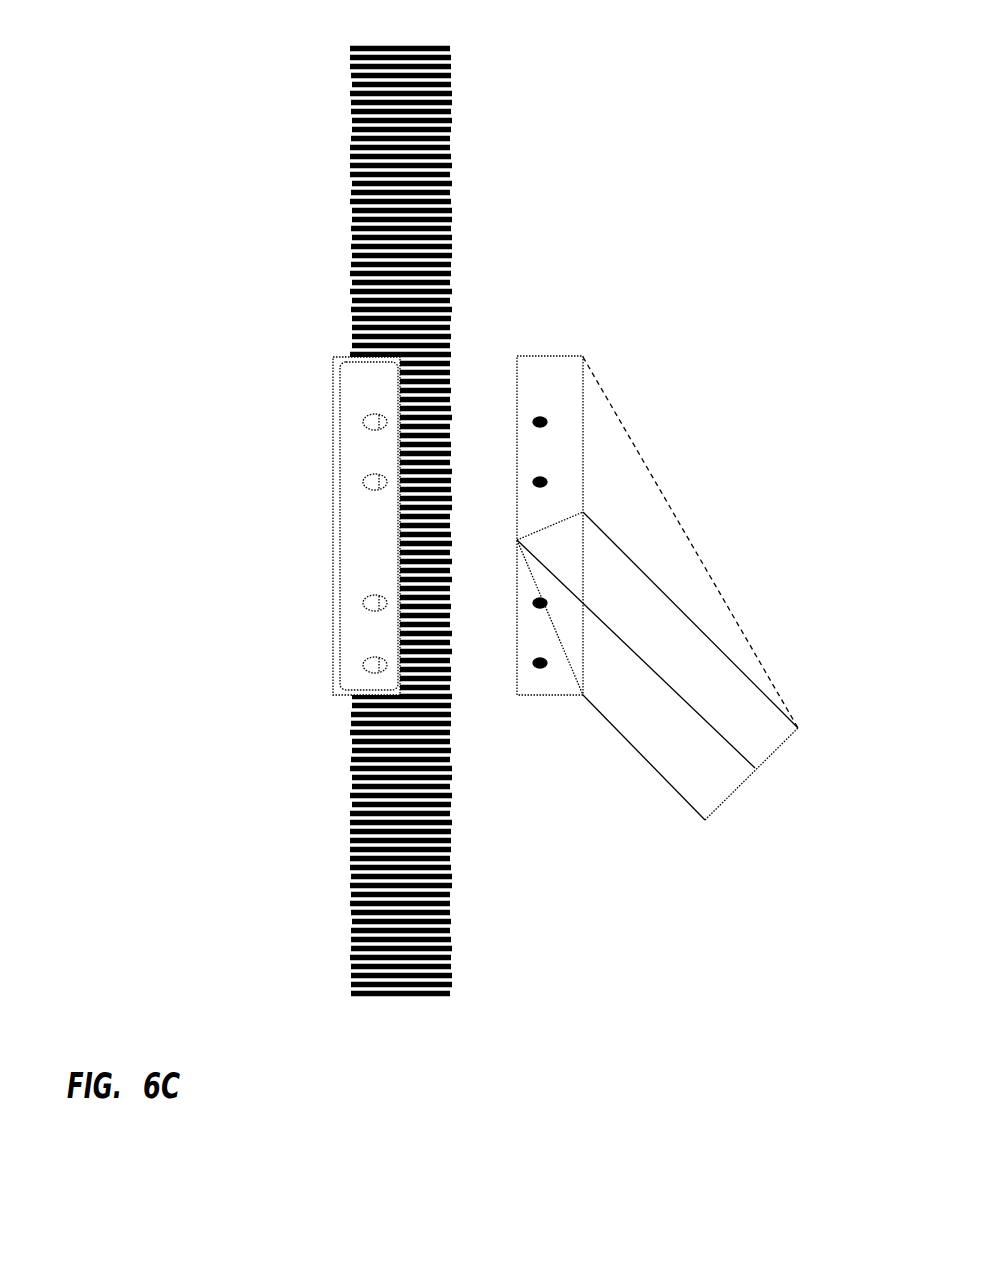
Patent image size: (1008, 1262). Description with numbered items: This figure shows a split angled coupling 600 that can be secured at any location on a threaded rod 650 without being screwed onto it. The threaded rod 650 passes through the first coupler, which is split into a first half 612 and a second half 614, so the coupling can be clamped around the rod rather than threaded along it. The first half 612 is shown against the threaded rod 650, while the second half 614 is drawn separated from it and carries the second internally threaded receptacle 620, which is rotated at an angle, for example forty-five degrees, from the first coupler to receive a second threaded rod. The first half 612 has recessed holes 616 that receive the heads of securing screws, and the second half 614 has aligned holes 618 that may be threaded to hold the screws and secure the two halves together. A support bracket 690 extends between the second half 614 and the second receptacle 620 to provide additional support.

The split angled coupling 600 is at (690, 200).
The first half 612 is at (357, 533).
The second half 614 is at (550, 375).
The holes 616 is at (375, 422).
The holes 618 is at (538, 417).
The second internally threaded receptacle 620 is at (723, 720).
The threaded rod 650 is at (413, 45).
The support bracket 690 is at (648, 493).